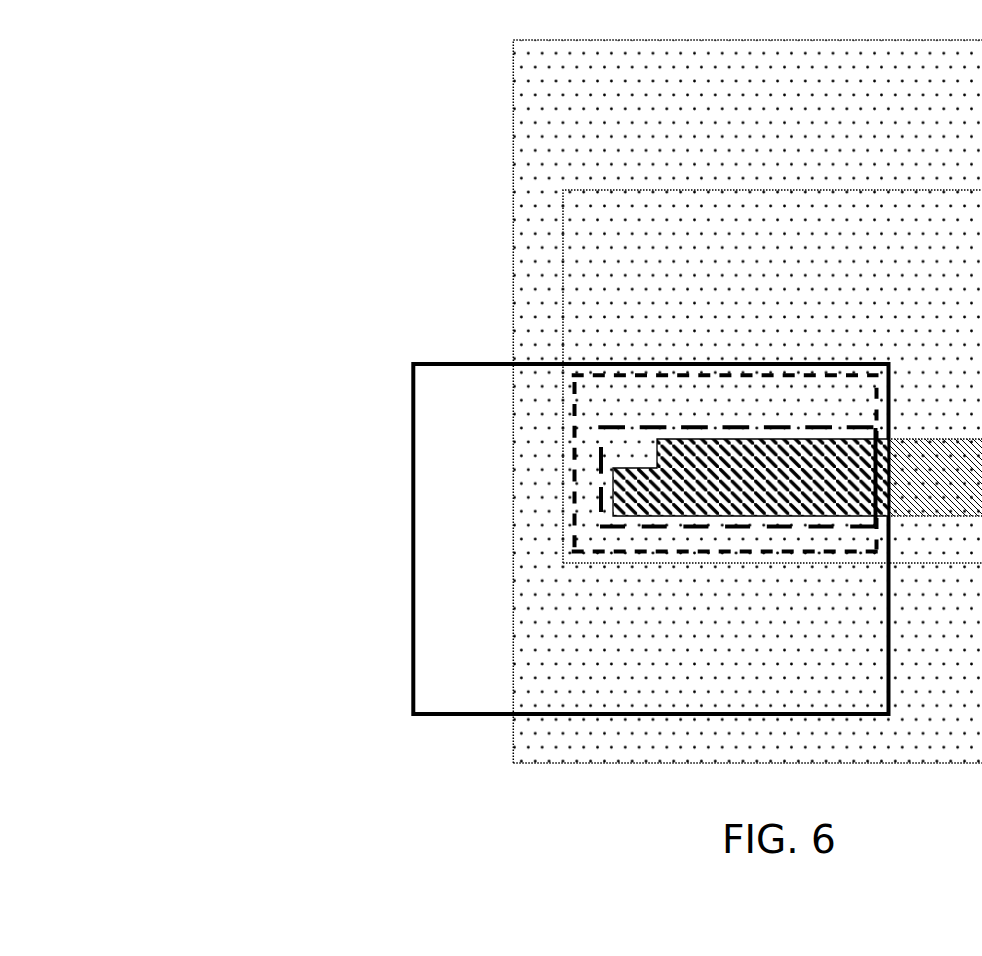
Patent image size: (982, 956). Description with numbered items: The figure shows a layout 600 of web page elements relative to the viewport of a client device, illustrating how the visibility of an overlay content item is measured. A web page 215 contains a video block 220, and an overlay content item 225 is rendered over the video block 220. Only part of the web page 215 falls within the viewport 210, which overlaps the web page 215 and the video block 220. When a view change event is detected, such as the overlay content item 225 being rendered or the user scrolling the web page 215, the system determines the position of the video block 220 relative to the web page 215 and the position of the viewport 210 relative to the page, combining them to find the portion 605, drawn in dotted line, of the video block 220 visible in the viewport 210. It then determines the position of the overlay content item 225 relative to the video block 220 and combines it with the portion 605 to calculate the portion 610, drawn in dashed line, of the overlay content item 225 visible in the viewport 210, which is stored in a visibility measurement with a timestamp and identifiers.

The layout 600 is at (250, 107).
The web page 215 is at (568, 83).
The video block 220 is at (618, 223).
The overlay content item 225 is at (968, 497).
The viewport 210 is at (469, 400).
The portion of the video block visible in the viewport 605 is at (625, 411).
The portion of the overlay content item visible in the viewport 610 is at (652, 461).